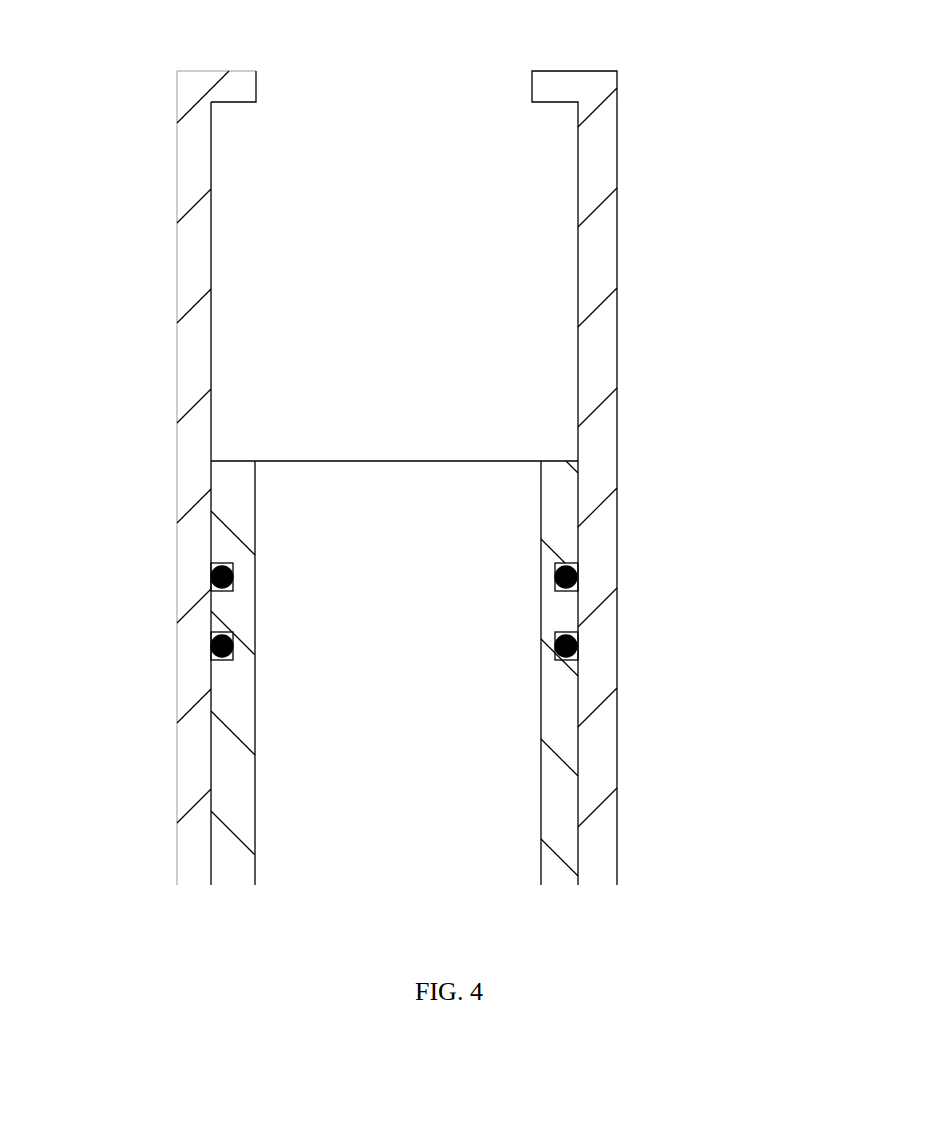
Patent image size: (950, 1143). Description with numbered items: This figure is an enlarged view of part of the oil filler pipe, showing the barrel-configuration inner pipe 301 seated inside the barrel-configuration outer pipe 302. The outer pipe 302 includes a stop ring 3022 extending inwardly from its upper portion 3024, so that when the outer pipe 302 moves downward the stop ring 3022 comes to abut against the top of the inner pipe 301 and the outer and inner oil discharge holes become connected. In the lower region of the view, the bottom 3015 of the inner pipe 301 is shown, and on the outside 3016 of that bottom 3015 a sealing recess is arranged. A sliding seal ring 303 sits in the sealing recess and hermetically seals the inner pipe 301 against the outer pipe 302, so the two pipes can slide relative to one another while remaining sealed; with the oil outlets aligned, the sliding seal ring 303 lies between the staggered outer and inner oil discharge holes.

The inner pipe 301 is at (365, 817).
The outer pipe 302 is at (187, 673).
The stop ring 3022 is at (315, 30).
The upper portion 3024 is at (718, 131).
The sliding seal ring 303 is at (210, 562).
The bottom 3015 is at (373, 587).
The outside 3016 is at (360, 523).